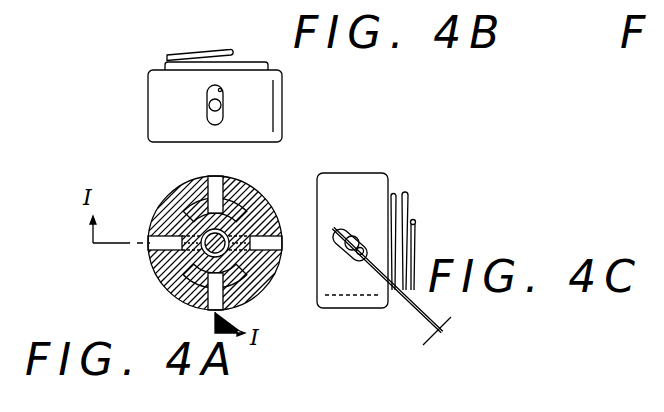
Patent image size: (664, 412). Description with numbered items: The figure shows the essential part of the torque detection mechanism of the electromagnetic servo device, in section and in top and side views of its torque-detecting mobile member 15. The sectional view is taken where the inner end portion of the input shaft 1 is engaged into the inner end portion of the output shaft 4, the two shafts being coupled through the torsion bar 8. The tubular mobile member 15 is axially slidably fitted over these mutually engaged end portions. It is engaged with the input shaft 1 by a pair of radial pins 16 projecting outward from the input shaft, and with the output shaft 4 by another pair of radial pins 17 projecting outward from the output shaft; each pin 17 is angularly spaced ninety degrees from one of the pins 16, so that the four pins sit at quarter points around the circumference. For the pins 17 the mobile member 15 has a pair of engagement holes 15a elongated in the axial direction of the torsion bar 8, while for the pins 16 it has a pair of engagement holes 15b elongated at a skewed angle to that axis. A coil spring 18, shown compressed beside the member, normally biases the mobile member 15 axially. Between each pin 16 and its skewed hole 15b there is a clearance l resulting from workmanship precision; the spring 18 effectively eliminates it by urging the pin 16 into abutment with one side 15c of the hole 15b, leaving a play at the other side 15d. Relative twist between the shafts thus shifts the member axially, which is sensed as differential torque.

In FIG. 4A, the input shaft 1 is at (211, 239).
In FIG. 4A, the output shaft 4 is at (193, 283).
In FIG. 4A, the torsion bar 8 is at (256, 278).
In FIG. 4B, the mobile member 15 is at (277, 100).
In FIG. 4A, the mobile member 15 is at (162, 200).
In FIG. 4C, the mobile member 15 is at (352, 184).
In FIG. 4B, the engagement holes 15a is at (221, 89).
In FIG. 4C, the engagement holes 15b is at (346, 233).
In FIG. 4C, the one side of the hole 15c is at (367, 248).
In FIG. 4C, the other side of the hole 15d is at (355, 262).
In FIG. 4A, the radial pins 16 is at (160, 238).
In FIG. 4C, the radial pins 16 is at (335, 230).
In FIG. 4B, the radial pins 17 is at (210, 106).
In FIG. 4A, the radial pins 17 is at (213, 181).
In FIG. 4B, the coil spring 18 is at (209, 50).
In FIG. 4C, the coil spring 18 is at (405, 211).
In FIG. 4C, the clearance l is at (440, 339).